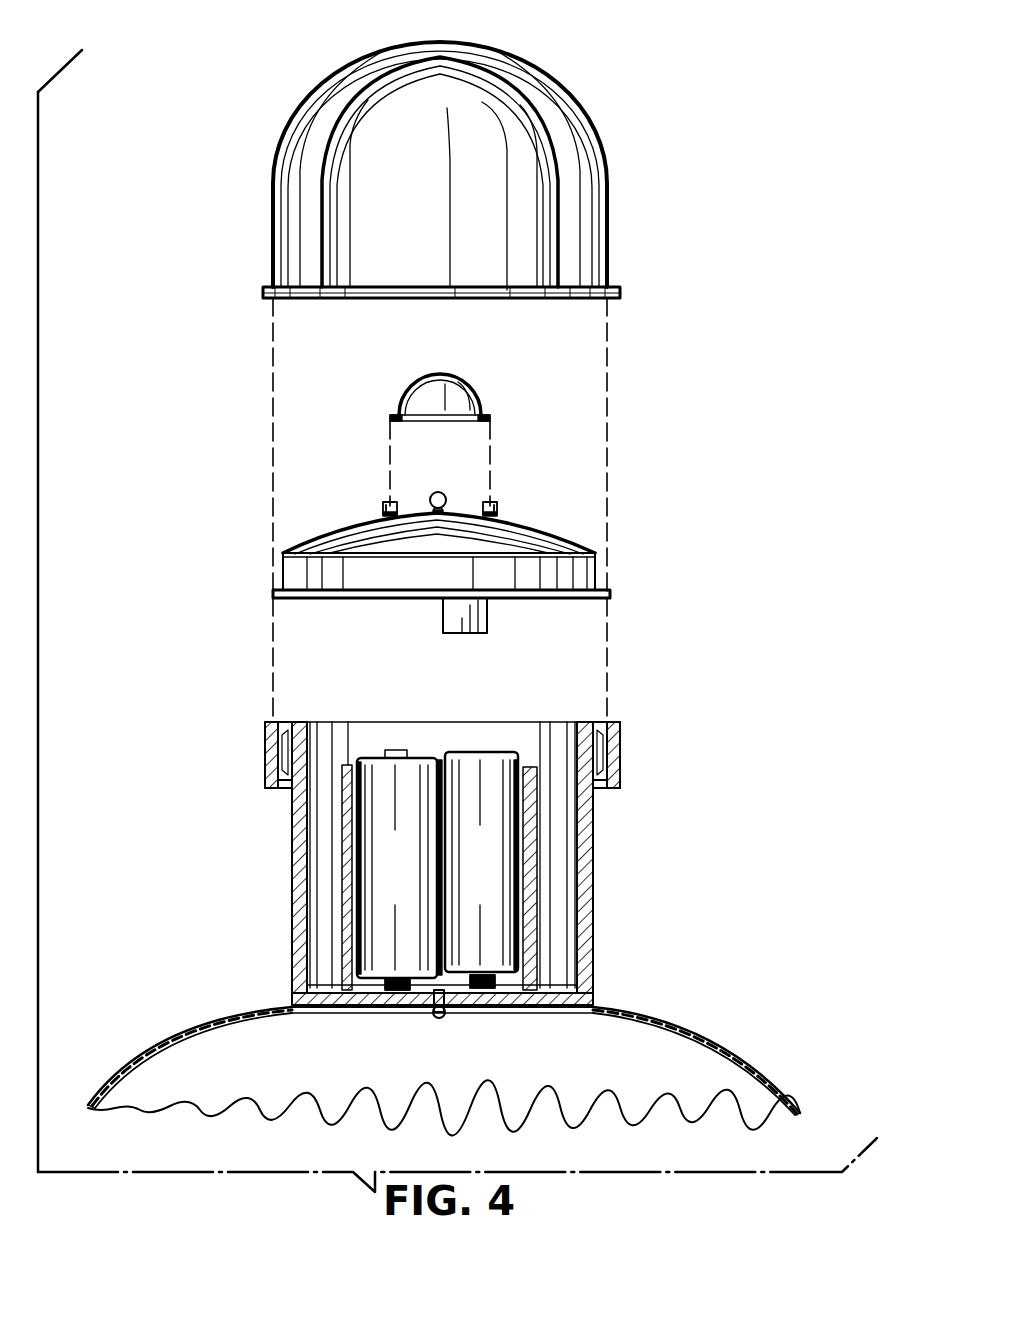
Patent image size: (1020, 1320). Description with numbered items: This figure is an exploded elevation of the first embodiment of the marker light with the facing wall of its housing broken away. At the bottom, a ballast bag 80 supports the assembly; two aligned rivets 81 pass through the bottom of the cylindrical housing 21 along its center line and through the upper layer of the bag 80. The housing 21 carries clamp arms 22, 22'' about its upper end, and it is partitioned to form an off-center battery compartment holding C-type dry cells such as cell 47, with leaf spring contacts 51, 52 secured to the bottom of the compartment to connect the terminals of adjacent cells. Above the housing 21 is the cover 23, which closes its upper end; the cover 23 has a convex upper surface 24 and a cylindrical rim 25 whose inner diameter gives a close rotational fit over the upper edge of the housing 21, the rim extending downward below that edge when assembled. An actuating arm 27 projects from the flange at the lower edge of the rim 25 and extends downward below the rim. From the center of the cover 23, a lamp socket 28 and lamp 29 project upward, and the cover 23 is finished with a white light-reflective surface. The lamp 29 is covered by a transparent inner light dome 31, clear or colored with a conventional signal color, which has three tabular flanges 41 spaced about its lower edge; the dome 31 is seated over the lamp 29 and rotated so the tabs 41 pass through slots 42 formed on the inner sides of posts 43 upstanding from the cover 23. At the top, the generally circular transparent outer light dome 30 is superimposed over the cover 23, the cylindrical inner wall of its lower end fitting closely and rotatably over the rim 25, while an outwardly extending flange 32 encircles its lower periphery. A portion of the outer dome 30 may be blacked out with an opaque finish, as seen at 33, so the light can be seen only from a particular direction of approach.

The cylindrical housing 21 is at (595, 930).
The clamp arm 22 is at (642, 755).
The clamp arm 22'' is at (239, 755).
The cover 23 is at (418, 553).
The convex upper surface 24 is at (336, 530).
The cylindrical rim 25 is at (282, 562).
The actuating arm 27 is at (447, 634).
The lamp socket 28 is at (452, 510).
The lamp 29 is at (438, 491).
The outer light dome 30 is at (492, 153).
The inner light dome 31 is at (452, 366).
The flange 32 is at (620, 292).
The blacked-out portion 33 is at (592, 233).
The tabular flange 41 is at (395, 413).
The slot 42 is at (396, 500).
The post 43 is at (383, 506).
The C-type alkaline dry cell 47 is at (478, 836).
The leaf spring contact 51 is at (392, 1010).
The leaf spring contact 52 is at (487, 1010).
The ballast bag 80 is at (700, 1045).
The rivet 81 is at (450, 1013).